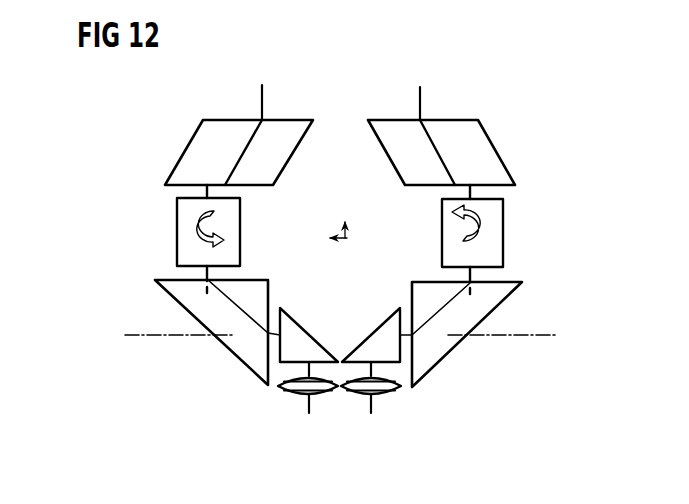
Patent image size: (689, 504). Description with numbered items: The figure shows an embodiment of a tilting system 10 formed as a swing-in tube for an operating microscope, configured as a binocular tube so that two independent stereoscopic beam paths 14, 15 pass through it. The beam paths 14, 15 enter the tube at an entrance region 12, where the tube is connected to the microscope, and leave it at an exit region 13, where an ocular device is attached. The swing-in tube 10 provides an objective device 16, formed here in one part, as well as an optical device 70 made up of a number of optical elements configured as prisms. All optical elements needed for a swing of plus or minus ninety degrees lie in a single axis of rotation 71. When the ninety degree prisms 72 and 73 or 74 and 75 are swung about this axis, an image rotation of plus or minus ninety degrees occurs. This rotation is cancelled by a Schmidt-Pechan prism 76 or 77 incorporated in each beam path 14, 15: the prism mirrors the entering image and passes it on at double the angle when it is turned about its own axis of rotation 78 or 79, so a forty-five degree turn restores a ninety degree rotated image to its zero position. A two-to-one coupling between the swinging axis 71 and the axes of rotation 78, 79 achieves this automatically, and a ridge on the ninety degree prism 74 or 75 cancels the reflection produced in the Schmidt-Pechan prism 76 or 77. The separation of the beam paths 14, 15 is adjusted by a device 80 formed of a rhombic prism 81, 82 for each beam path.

The tilting system 10 is at (122, 186).
The entrance region 12 is at (299, 414).
The exit region 13 is at (241, 74).
The beam path 14 is at (264, 100).
The beam path 15 is at (422, 100).
The objective device 16 is at (360, 411).
The optical device 70 is at (139, 241).
The axis of rotation 71 is at (155, 338).
The 90° prism 72 is at (302, 336).
The 90° prism 73 is at (376, 336).
The 90° prism 74 is at (240, 357).
The 90° prism 75 is at (437, 355).
The Schmidt-Pechan prism 76 is at (178, 207).
The Schmidt-Pechan prism 77 is at (442, 208).
The axis of rotation 78 is at (198, 254).
The axis of rotation 79 is at (463, 254).
The device 80 is at (177, 147).
The rhombic prism 81 is at (237, 128).
The rhombic prism 82 is at (397, 128).